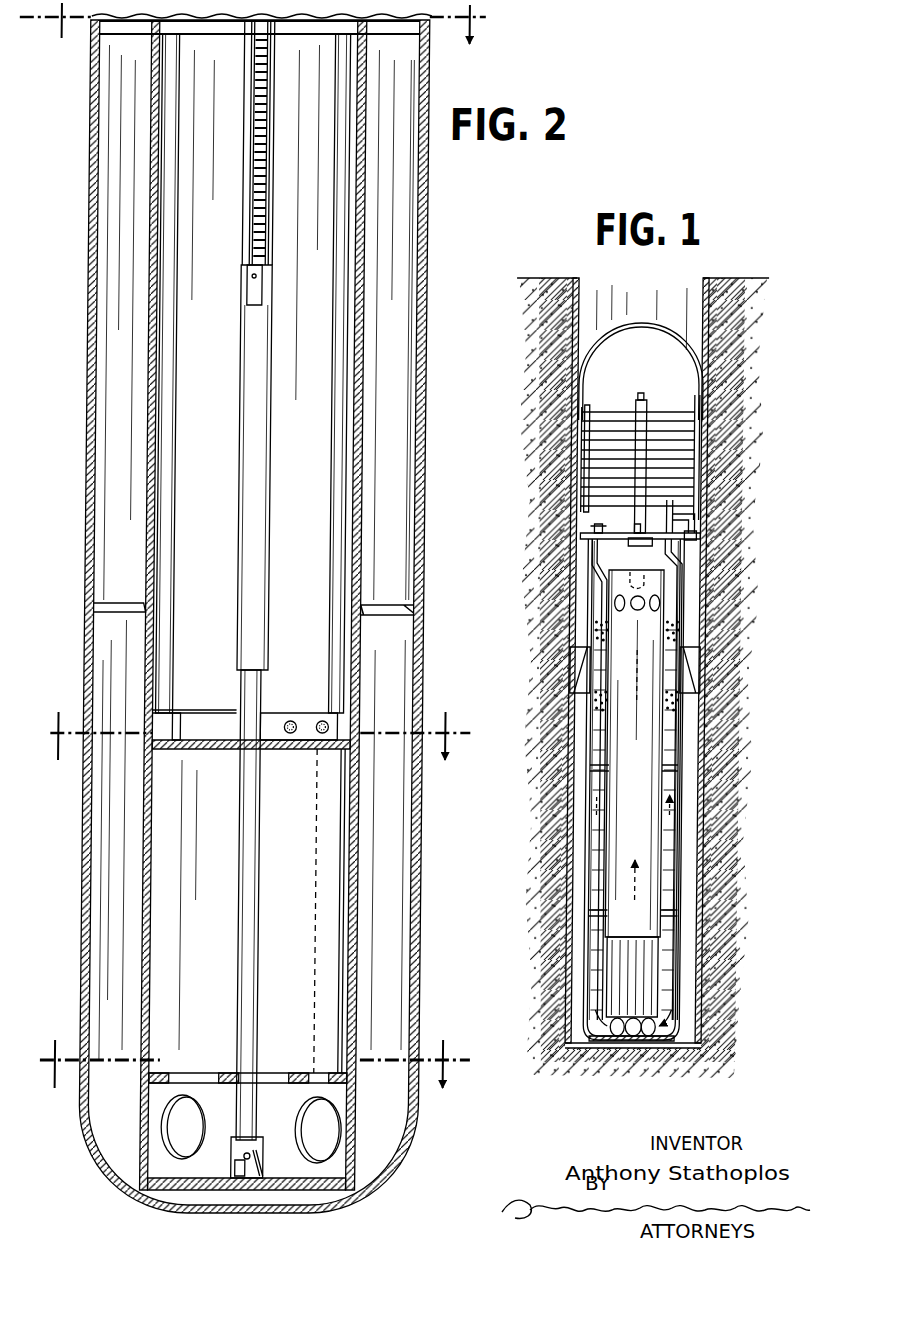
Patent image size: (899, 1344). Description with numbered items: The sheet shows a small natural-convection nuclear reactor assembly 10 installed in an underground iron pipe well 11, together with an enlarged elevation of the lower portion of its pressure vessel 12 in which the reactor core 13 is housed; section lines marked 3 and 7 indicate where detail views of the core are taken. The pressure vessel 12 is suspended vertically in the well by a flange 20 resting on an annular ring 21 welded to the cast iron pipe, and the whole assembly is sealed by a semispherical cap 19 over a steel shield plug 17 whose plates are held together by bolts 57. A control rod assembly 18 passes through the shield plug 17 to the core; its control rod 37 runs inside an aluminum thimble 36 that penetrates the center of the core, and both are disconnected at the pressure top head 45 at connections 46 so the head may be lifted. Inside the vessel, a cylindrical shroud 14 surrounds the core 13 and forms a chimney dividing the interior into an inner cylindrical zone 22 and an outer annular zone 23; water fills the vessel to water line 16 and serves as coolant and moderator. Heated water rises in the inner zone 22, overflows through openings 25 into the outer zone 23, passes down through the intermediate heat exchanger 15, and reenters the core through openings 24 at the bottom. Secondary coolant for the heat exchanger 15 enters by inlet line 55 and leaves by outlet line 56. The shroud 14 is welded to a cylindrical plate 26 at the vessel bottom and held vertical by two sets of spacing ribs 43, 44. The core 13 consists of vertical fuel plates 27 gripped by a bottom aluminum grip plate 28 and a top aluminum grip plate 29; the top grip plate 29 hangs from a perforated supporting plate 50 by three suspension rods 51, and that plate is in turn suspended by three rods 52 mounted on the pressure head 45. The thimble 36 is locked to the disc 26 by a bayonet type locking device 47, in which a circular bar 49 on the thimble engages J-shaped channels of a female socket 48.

In FIG. 2, the nuclear reactor assembly 10 is at (265, 31).
In FIG. 1, the nuclear reactor assembly 10 is at (550, 643).
In FIG. 1, the iron pipe well 11 is at (700, 577).
In FIG. 2, the pressure vessel 12 is at (432, 410).
In FIG. 1, the pressure vessel 12 is at (690, 742).
In FIG. 2, the reactor core 13 is at (301, 886).
In FIG. 1, the reactor core 13 is at (620, 985).
In FIG. 2, the shroud 14 is at (365, 490).
In FIG. 1, the shroud 14 is at (625, 728).
In FIG. 1, the intermediate heat exchanger 15 is at (685, 627).
In FIG. 1, the water line 16 is at (613, 607).
In FIG. 1, the steel shield plug 17 is at (619, 413).
In FIG. 2, the control rod assembly 18 is at (278, 196).
In FIG. 1, the control rod assembly 18 is at (654, 418).
In FIG. 1, the semispherical cap 19 is at (650, 325).
In FIG. 1, the flange 20 is at (707, 667).
In FIG. 1, the annular ring 21 is at (707, 693).
In FIG. 2, the inner cylindrical zone 22 is at (318, 551).
In FIG. 1, the inner cylindrical zone 22 is at (656, 847).
In FIG. 2, the outer annular zone 23 is at (150, 445).
In FIG. 1, the outer annular zone 23 is at (607, 840).
In FIG. 2, the openings 24 is at (185, 1115).
In FIG. 1, the openings 24 is at (644, 1033).
In FIG. 1, the openings 25 is at (667, 601).
In FIG. 2, the cylindrical plate 26 is at (221, 1190).
In FIG. 1, the cylindrical plate 26 is at (660, 1045).
In FIG. 2, the fuel plates 27 is at (356, 850).
In FIG. 2, the bottom aluminum grip plate 28 is at (184, 1085).
In FIG. 2, the top aluminum grip plate 29 is at (216, 757).
In FIG. 2, the aluminum thimble 36 is at (268, 480).
In FIG. 2, the control rod 37 is at (257, 400).
In FIG. 2, the spacing ribs 43 is at (388, 606).
In FIG. 1, the spacing ribs 43 is at (673, 912).
In FIG. 2, the spacing ribs 44 is at (372, 36).
In FIG. 1, the spacing ribs 44 is at (686, 766).
In FIG. 1, the pressure top head 45 is at (703, 518).
In FIG. 1, the connections 46 is at (640, 537).
In FIG. 2, the bayonet type locking device 47 is at (250, 1165).
In FIG. 2, the female socket 48 is at (272, 1153).
In FIG. 2, the circular bar 49 is at (245, 1148).
In FIG. 2, the perforated supporting plate 50 is at (320, 700).
In FIG. 2, the suspension rods 51 is at (190, 725).
In FIG. 2, the rods 52 is at (180, 675).
In FIG. 1, the inlet line 55 is at (676, 550).
In FIG. 1, the outlet line 56 is at (606, 548).
In FIG. 1, the bolts 57 is at (594, 407).
In FIG. 2, the section line 3- 3 is at (250, 1063).
In FIG. 2, the section line 7- 7 is at (251, 734).